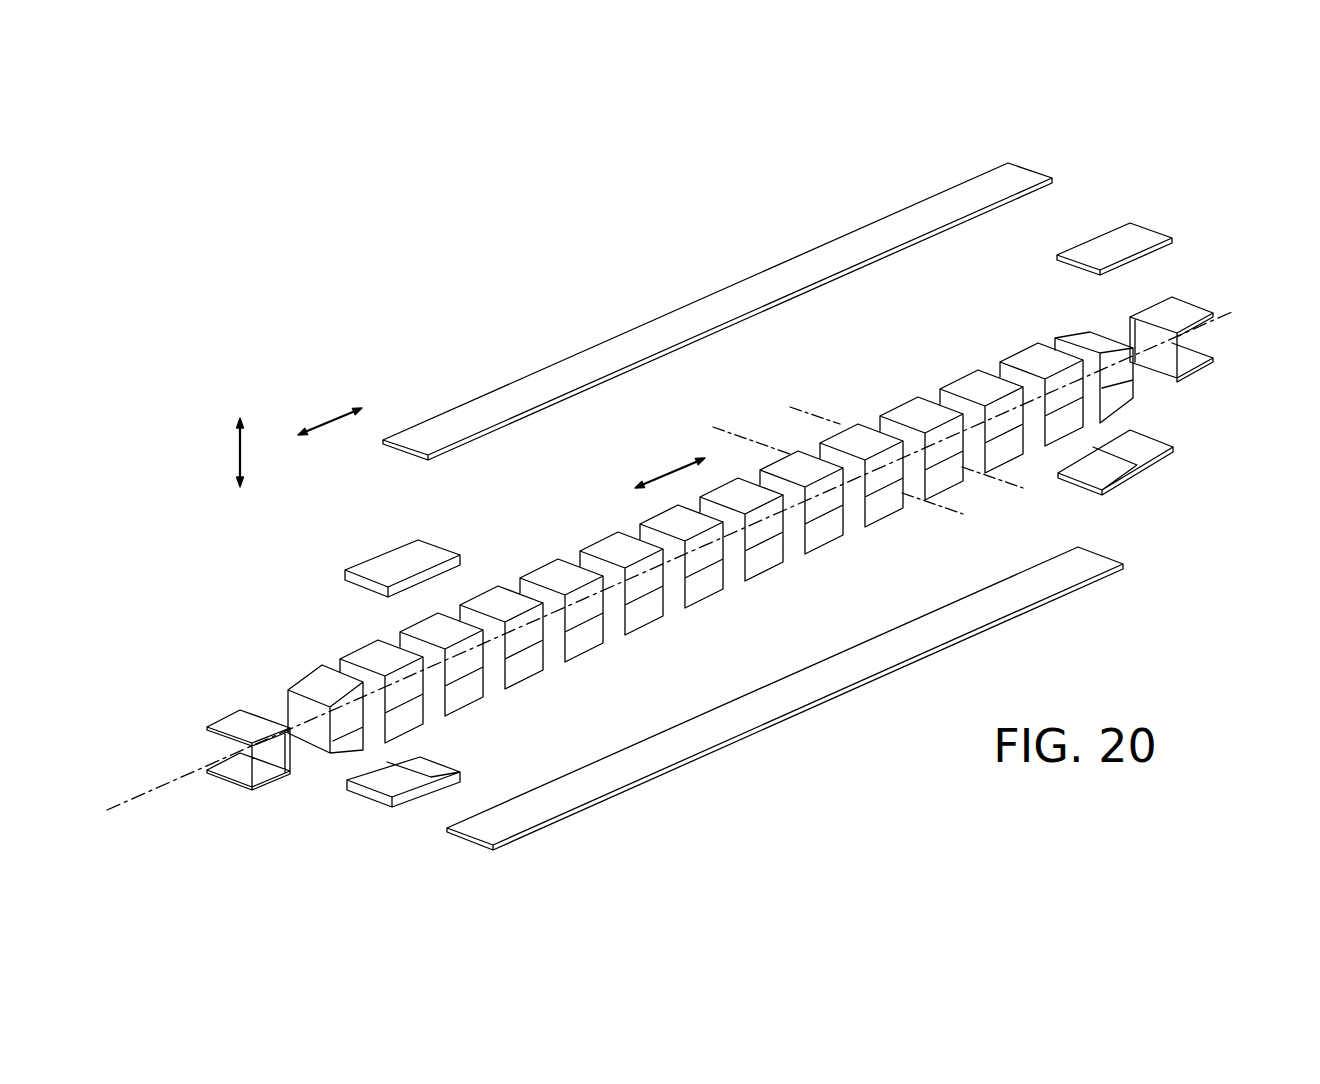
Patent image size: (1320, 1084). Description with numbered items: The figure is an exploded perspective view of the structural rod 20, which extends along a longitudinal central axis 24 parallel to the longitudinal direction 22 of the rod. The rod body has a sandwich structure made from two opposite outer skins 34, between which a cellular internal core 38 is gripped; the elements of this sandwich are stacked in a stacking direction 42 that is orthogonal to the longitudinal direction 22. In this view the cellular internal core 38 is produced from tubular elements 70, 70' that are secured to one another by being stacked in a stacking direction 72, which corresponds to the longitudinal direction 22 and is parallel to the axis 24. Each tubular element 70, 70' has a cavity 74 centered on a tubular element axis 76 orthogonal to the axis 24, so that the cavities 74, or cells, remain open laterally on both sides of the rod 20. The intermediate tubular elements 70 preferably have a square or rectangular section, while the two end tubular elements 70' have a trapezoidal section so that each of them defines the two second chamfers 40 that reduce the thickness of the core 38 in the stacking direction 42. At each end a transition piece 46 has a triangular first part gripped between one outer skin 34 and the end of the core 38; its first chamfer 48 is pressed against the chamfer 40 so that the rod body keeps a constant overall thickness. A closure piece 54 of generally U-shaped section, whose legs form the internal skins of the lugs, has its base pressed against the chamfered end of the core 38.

The structural rod 20 is at (848, 212).
The longitudinal direction 22 is at (328, 417).
The longitudinal central axis 24 is at (170, 783).
The outer skin 34 is at (753, 493).
The cellular internal core 38 is at (590, 512).
The chamfer 40 is at (304, 682).
The stacking direction 42 is at (238, 455).
The transition piece 46 is at (372, 565).
The first chamfer 48 is at (446, 570).
The closure piece 54 is at (215, 707).
The tubular element 70 is at (711, 549).
The end tubular element 70' is at (810, 551).
The stacking direction 72 is at (668, 470).
The cavity 74 is at (576, 602).
The tubular element axis 76 is at (718, 425).